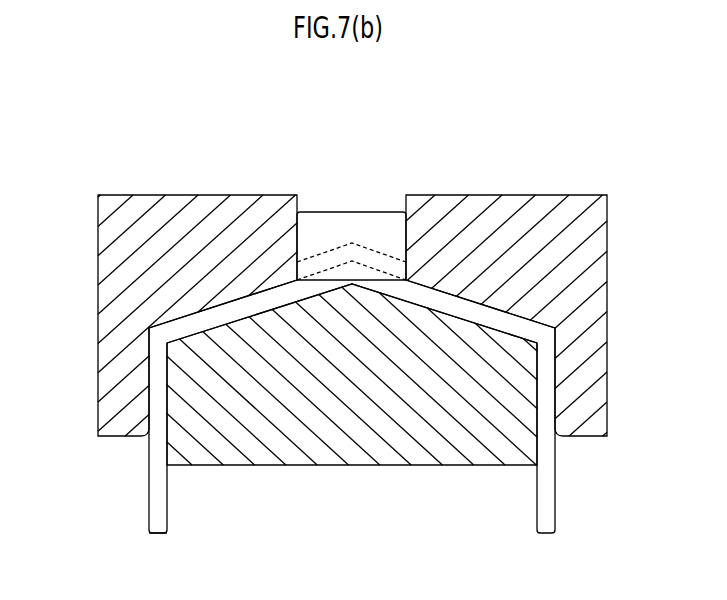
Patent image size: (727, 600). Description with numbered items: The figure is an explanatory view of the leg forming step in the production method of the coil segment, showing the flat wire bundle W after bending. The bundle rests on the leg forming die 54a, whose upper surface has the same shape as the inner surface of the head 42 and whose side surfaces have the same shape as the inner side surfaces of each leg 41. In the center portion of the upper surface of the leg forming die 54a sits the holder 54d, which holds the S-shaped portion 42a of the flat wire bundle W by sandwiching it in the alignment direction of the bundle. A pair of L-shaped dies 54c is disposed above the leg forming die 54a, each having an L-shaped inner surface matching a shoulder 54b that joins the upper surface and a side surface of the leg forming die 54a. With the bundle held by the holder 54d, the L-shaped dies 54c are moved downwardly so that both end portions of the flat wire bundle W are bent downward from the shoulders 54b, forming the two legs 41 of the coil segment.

The leg 41 is at (167, 513).
The head 42 is at (239, 298).
The S-shaped portion 42a is at (352, 243).
The leg forming die 54a is at (380, 466).
The shoulder 54b is at (152, 327).
The L-shaped die 54c is at (157, 195).
The holder 54d is at (381, 212).
The flat wire bundle W is at (149, 505).